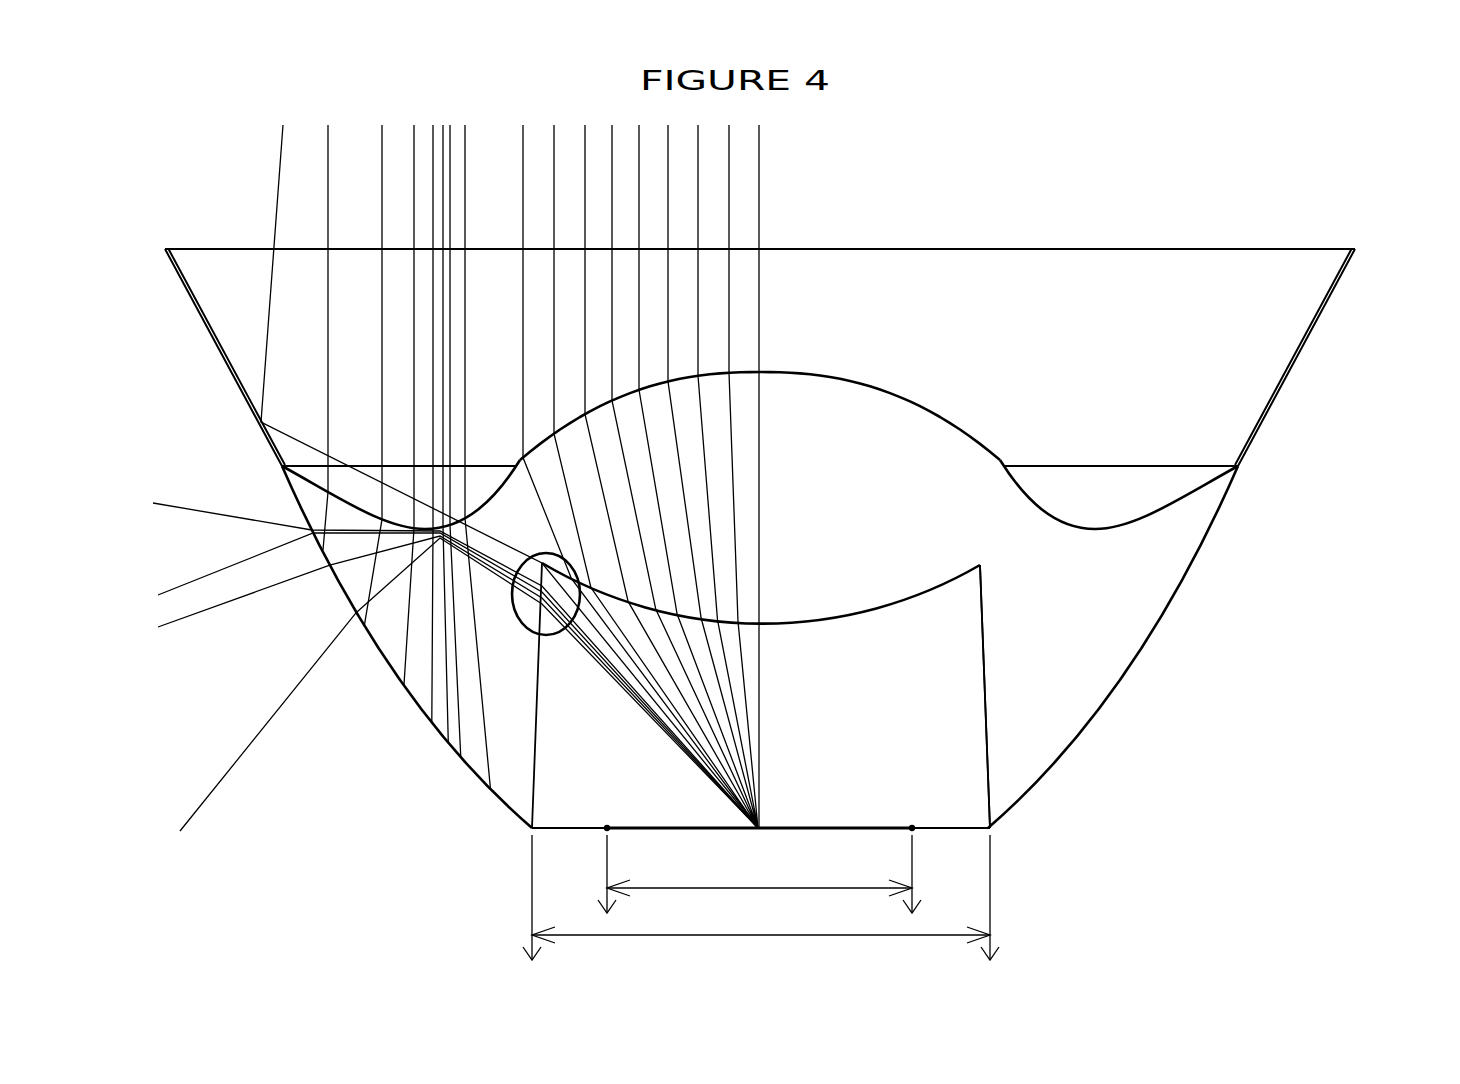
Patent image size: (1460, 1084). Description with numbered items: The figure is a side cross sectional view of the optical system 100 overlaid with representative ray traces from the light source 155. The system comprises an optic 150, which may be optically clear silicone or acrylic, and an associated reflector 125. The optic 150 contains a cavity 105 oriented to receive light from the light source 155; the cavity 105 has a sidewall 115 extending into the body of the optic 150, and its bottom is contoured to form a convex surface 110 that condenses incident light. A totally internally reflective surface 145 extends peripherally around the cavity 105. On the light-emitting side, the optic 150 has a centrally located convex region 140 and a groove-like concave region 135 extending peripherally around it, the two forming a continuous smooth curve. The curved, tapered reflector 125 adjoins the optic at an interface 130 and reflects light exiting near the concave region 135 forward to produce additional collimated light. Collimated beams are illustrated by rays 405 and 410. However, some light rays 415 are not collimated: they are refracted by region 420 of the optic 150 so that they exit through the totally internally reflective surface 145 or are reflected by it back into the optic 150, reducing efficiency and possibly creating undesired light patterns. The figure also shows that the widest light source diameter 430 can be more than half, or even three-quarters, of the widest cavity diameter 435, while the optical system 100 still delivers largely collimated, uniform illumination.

The optical system 100 is at (1150, 98).
The cavity 105 is at (880, 792).
The convex surface 110 is at (846, 625).
The sidewall 115 is at (980, 655).
The reflector 125 is at (1342, 300).
The interface 130 is at (1243, 468).
The concave region 135 is at (1101, 498).
The convex region 140 is at (833, 372).
The totally internally reflective surface 145 is at (1180, 588).
The optic 150 is at (1262, 695).
The light source 155 is at (777, 832).
The rays 405 is at (766, 130).
The rays 410 is at (322, 126).
The light rays 415 is at (193, 513).
The region 420 is at (531, 560).
The widest light source diameter 430 is at (767, 888).
The widest cavity diameter 435 is at (728, 935).